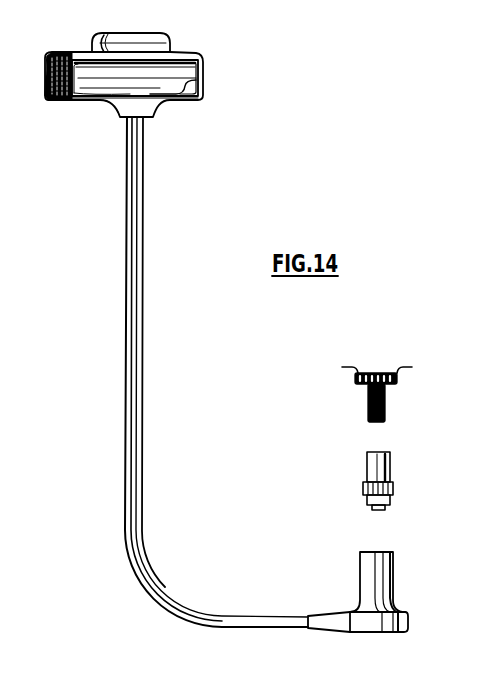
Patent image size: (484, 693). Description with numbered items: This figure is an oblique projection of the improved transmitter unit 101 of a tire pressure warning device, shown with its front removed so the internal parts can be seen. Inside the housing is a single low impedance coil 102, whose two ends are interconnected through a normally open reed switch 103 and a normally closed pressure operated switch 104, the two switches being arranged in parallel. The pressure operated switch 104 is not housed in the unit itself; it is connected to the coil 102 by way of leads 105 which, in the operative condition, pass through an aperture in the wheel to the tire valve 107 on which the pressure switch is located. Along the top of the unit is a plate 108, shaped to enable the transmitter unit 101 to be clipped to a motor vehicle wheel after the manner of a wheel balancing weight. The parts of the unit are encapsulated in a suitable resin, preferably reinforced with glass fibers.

The transmitter unit 101 is at (186, 56).
The low impedance coil 102 is at (197, 86).
The reed switch 103 is at (113, 99).
The pressure operated switch 104 is at (386, 468).
The leads 105 is at (135, 466).
The tire valve 107 is at (384, 404).
The plate 108 is at (131, 44).